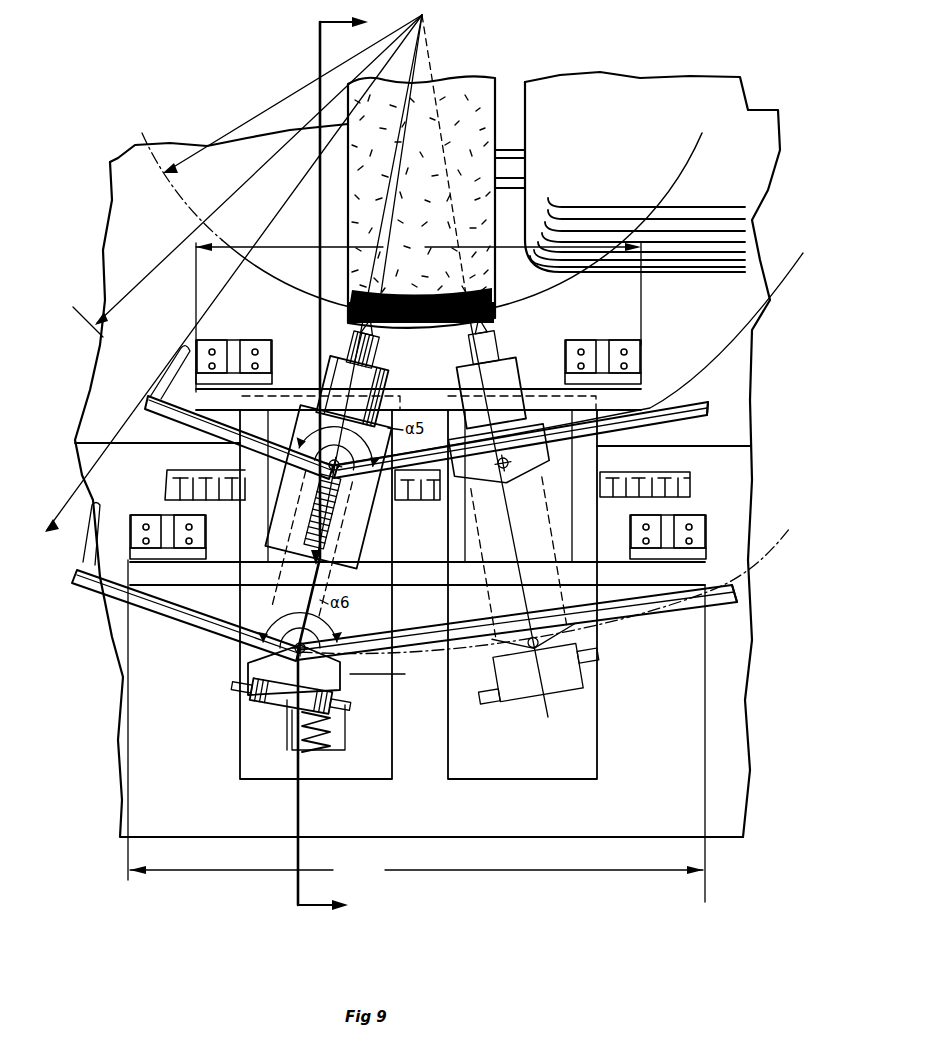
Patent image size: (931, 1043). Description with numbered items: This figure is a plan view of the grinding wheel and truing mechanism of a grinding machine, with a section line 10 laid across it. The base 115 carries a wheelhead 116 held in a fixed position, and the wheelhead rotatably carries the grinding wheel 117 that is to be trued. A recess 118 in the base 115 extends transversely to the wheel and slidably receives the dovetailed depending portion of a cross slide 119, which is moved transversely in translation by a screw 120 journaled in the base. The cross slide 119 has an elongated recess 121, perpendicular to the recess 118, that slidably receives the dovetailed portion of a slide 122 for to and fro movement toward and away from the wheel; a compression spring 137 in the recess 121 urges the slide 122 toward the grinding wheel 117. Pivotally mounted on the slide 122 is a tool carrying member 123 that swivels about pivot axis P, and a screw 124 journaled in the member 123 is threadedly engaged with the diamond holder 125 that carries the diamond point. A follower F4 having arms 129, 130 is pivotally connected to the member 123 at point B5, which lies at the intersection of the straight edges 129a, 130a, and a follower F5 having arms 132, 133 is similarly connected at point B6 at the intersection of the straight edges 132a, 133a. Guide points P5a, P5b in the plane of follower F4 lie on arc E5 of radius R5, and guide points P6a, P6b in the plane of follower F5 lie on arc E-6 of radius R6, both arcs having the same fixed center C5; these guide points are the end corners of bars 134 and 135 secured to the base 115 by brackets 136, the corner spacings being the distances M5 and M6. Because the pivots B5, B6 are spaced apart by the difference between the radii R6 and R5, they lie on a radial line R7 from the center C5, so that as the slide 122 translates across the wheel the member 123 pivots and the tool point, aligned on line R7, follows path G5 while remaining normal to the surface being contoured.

The section line 10 is at (333, 467).
The base 115 is at (412, 480).
The wheelhead 116 is at (637, 454).
The grinding wheel 117 is at (421, 202).
The recess 118 is at (693, 446).
The cross slide 119 is at (238, 746).
The screw 120 is at (692, 480).
The elongated recess 121 is at (286, 732).
The slide 122 is at (347, 715).
The tool carrying member 123 is at (393, 674).
The screw 124 is at (290, 560).
The diamond holder 125 is at (388, 362).
The arm 129 is at (146, 395).
The straight edge 129a is at (183, 350).
The arm 130 is at (709, 407).
The straight edge 130a is at (684, 396).
The arm 132 is at (76, 575).
The straight edge 132a is at (88, 540).
The arm 133 is at (740, 600).
The straight edge 133a is at (711, 578).
The bar 134 is at (289, 383).
The bar 135 is at (190, 590).
The bracket 136 is at (206, 338).
The compression spring 137 is at (334, 750).
The center C5 is at (424, 17).
The radius R5 is at (250, 184).
The radius R6 is at (276, 222).
The radial line R7 is at (396, 146).
The path G5 is at (268, 284).
The arc E5 is at (100, 330).
The arc E-6 is at (640, 622).
The distance M5 is at (418, 315).
The distance M6 is at (416, 731).
The follower F4 is at (176, 425).
The follower F5 is at (95, 594).
The guide point P5a is at (300, 400).
The guide point P5b is at (544, 401).
The guide point P6a is at (132, 587).
The guide point P6b is at (705, 587).
The pivot point B5 is at (310, 512).
The pivot point B6 is at (250, 658).
The pivot axis P is at (319, 565).